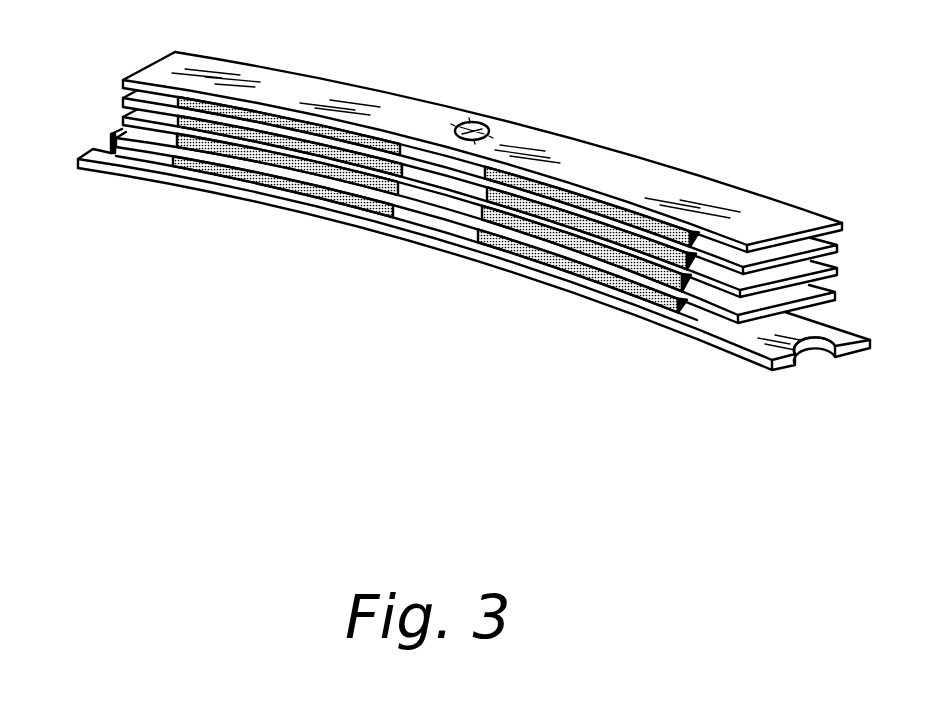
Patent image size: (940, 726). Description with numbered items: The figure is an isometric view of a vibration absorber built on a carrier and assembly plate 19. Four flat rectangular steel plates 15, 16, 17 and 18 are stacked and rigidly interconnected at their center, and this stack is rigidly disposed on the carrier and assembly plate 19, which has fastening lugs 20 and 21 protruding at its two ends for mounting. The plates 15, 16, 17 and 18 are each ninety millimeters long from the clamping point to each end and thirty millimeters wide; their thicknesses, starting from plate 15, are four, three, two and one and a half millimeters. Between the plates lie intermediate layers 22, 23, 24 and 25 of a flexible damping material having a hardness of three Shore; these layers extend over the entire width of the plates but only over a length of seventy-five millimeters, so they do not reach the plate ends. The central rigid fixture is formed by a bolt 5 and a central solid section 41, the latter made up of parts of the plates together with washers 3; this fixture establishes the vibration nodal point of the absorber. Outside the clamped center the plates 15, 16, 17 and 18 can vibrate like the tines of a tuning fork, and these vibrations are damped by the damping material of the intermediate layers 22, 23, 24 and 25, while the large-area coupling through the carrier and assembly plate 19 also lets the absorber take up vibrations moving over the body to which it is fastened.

The washers 3 is at (466, 259).
The bolt 5 is at (474, 122).
The plate 15 is at (822, 306).
The plate 16 is at (835, 277).
The plate 17 is at (836, 249).
The plate 18 is at (840, 226).
The carrier and assembly plate 19 is at (350, 216).
The fastening lug 20 is at (110, 151).
The fastening lug 21 is at (818, 347).
The intermediate layer 22 is at (545, 270).
The intermediate layer 23 is at (612, 253).
The intermediate layer 24 is at (600, 227).
The intermediate layer 25 is at (560, 188).
The central solid section 41 is at (500, 228).